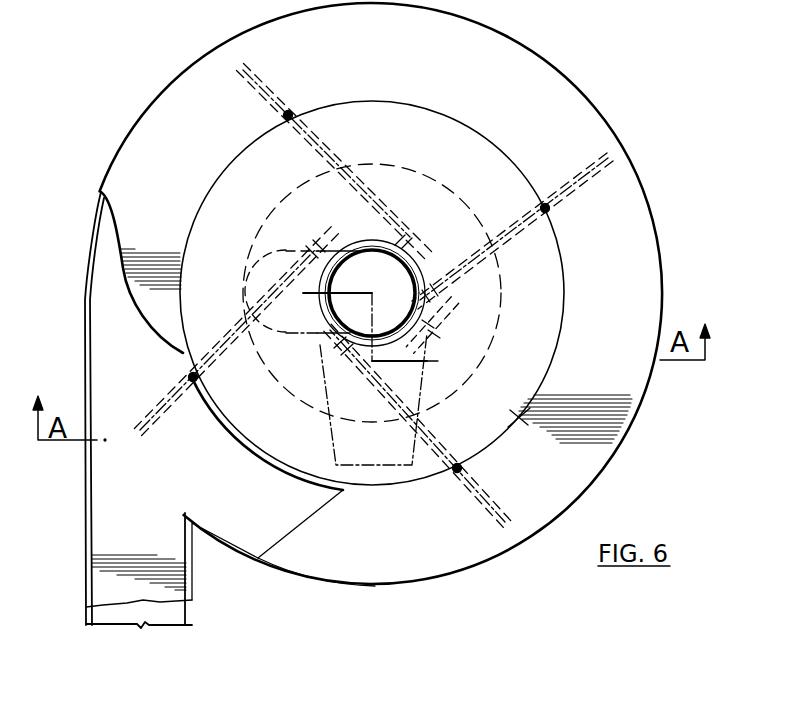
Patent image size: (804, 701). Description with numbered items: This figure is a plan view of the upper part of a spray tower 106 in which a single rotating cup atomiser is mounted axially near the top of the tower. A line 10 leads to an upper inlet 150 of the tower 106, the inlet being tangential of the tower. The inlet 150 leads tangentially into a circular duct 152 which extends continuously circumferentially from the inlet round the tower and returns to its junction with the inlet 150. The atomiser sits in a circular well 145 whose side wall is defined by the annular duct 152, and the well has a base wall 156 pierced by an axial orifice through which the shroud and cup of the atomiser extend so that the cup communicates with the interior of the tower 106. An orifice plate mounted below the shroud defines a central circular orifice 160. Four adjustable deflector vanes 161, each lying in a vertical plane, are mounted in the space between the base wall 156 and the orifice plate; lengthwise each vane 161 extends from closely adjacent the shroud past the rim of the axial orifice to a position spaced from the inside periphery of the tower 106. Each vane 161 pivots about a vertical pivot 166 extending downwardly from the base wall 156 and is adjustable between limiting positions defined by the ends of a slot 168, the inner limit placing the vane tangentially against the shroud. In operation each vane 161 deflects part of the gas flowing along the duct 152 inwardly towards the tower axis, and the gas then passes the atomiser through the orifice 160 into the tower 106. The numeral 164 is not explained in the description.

The line 10 is at (85, 568).
The tower 106 is at (176, 86).
The circular well 145 is at (518, 417).
The upper inlet 150 is at (195, 578).
The circular duct 152 is at (548, 62).
The base wall 156 is at (243, 244).
The central circular orifice 160 is at (503, 291).
The adjustable deflector vanes 161 is at (332, 148).
The fastener 164 is at (545, 200).
The vertical pivot 166 is at (291, 108).
The slot 168 is at (318, 372).